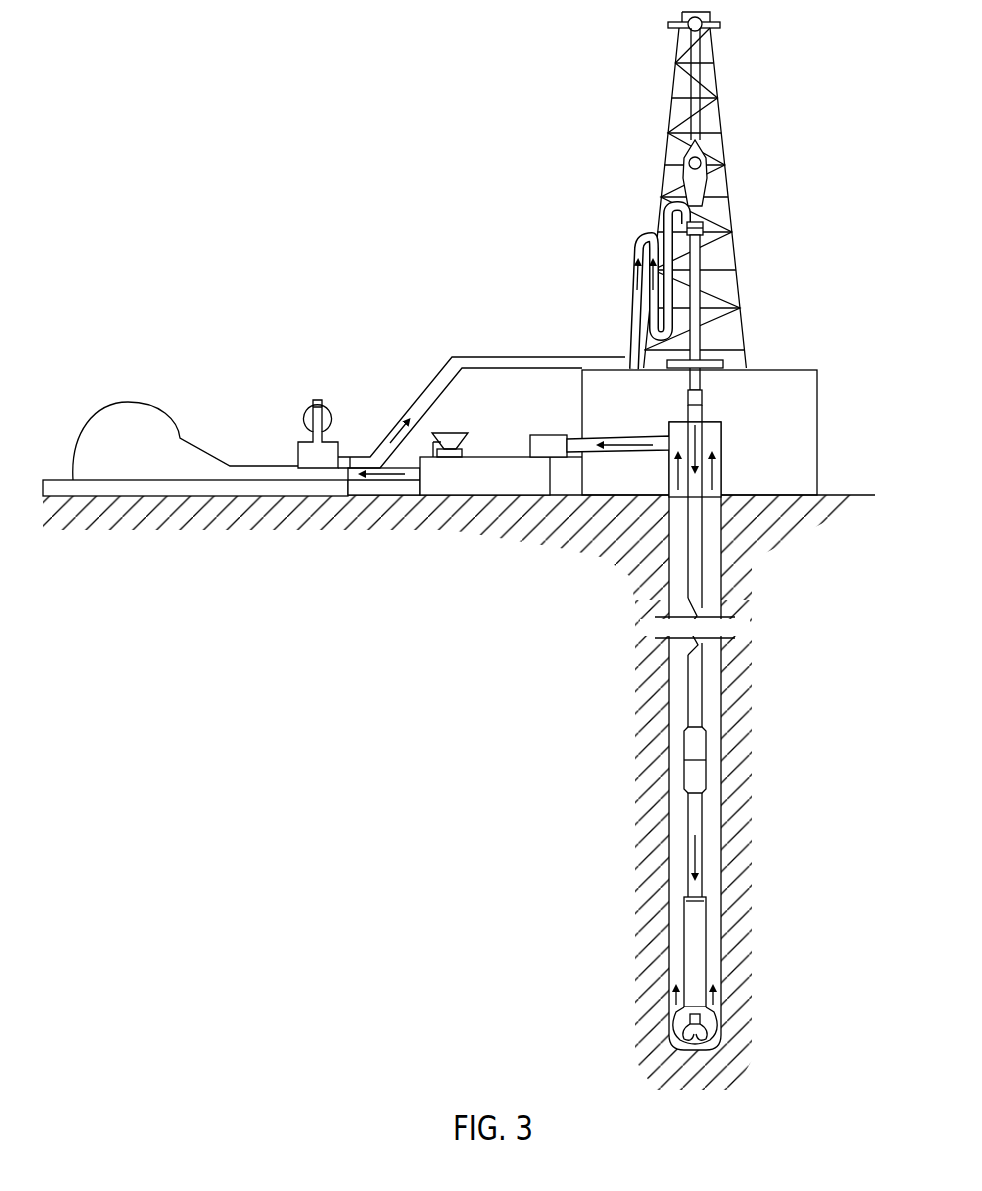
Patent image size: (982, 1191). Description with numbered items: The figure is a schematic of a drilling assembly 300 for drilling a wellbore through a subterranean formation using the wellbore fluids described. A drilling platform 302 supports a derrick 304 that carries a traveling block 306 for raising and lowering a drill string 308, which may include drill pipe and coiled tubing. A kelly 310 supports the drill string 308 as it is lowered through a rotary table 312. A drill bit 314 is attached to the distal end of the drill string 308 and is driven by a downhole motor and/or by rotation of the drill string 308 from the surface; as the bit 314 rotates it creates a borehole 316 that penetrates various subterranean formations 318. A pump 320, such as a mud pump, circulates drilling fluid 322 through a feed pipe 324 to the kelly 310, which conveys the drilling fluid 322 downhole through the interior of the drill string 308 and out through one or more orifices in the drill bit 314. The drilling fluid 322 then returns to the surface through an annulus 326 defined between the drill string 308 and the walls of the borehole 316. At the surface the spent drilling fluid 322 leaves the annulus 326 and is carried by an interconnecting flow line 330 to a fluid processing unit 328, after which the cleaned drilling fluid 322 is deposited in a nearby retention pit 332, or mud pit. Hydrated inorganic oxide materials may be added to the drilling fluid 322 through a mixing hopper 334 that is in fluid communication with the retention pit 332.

The drilling assembly 300 is at (414, 90).
The drilling platform 302 is at (818, 382).
The derrick 304 is at (727, 112).
The traveling block 306 is at (708, 160).
The drill string 308 is at (698, 572).
The kelly 310 is at (697, 280).
The rotary table 312 is at (723, 365).
The drill bit 314 is at (722, 1015).
The borehole 316 is at (722, 688).
The subterranean formations 318 is at (557, 779).
The pump 320 is at (136, 460).
The drilling fluid 322 is at (362, 455).
The feed pipe 324 is at (456, 356).
The annulus 326 is at (710, 848).
The fluid processing unit 328 is at (532, 446).
The interconnecting flow line 330 is at (652, 452).
The retention pit 332 is at (528, 487).
The mixing hopper 334 is at (447, 450).